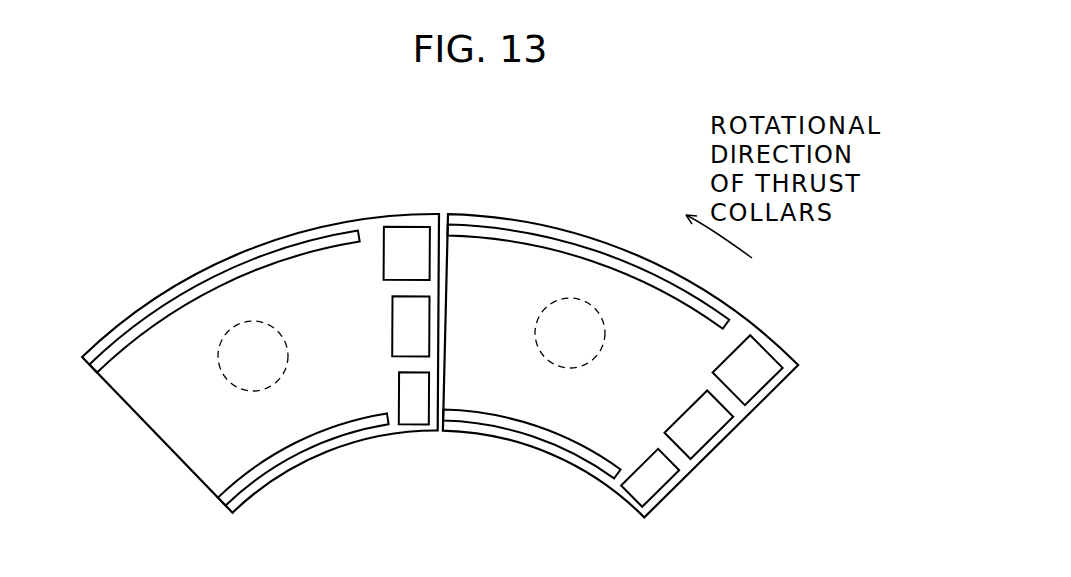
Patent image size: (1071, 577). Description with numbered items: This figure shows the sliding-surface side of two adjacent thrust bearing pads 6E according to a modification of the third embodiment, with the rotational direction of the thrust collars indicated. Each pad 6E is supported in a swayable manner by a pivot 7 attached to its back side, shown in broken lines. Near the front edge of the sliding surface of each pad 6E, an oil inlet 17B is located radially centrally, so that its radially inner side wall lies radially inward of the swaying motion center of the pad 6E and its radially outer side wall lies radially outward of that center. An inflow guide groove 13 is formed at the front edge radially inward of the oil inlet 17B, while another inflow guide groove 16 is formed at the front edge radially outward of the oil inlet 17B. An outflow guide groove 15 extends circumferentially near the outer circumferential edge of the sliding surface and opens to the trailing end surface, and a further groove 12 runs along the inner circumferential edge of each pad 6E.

The pad 6E is at (186, 272).
The pivot 7 is at (262, 320).
The inner peripheral groove 12 is at (271, 466).
The inflow guide groove 13 is at (423, 418).
The outflow guide groove 15 is at (325, 232).
The inflow guide groove 16 is at (415, 240).
The oil inlet 17B is at (405, 329).